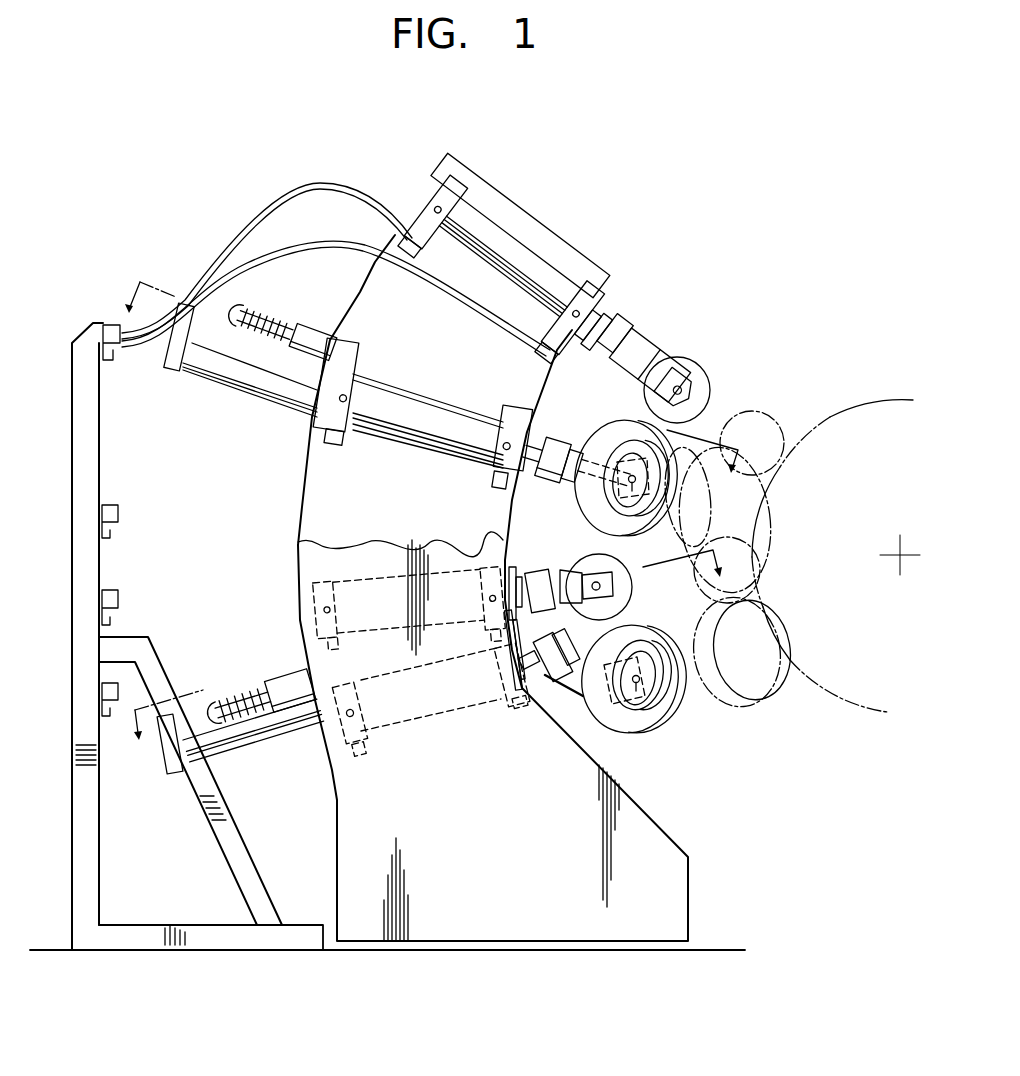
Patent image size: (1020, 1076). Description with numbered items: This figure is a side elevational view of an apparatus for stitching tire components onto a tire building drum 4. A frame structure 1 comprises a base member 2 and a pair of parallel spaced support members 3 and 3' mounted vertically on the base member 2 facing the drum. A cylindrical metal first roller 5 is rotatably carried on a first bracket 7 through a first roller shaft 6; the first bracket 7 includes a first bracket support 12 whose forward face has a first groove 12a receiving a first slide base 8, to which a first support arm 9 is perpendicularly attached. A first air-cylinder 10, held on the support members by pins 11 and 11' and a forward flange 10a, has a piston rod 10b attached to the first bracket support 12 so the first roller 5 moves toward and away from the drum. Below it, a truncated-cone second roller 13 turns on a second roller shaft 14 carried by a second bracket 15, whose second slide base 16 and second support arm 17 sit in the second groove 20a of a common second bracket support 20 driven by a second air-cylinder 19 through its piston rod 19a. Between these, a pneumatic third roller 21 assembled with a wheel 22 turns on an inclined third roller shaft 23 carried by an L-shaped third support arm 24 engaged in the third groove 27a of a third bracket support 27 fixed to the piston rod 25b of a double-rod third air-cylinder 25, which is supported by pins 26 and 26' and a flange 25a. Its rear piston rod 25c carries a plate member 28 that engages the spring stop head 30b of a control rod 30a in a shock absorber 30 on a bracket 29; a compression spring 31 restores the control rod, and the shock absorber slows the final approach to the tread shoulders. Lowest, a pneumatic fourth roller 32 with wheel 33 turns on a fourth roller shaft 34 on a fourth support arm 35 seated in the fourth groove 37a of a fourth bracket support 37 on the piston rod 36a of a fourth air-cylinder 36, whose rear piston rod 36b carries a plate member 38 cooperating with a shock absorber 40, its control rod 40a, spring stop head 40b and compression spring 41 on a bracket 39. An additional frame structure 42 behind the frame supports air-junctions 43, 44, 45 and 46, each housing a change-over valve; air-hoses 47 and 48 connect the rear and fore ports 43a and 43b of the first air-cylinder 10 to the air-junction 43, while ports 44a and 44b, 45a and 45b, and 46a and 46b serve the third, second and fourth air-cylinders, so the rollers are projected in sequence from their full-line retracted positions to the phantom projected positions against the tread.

The frame structure 1 is at (496, 190).
The base member 2 is at (696, 949).
The support member 3 is at (470, 635).
The support member 3' is at (341, 445).
The tire building drum 4 is at (878, 394).
The first roller 5 is at (694, 369).
The first roller shaft 6 is at (686, 368).
The first bracket 7 is at (646, 333).
The first slide base 8 is at (637, 310).
The first support arm 9 is at (665, 344).
The first air-cylinder 10 is at (512, 238).
The flange 10a is at (603, 292).
The piston rod 10b is at (605, 318).
The pin 11 is at (416, 197).
The pin 11' is at (567, 298).
The first bracket support 12 is at (606, 357).
The first groove 12a is at (609, 364).
The second roller 13 is at (633, 585).
The second roller shaft 14 is at (600, 582).
The second bracket 15 is at (540, 572).
The second slide base 16 is at (558, 573).
The second support arm 17 is at (568, 568).
The second air-cylinder 19 is at (380, 589).
The piston rod 19a is at (490, 567).
The second bracket support 20 is at (548, 612).
The second groove 20a is at (508, 563).
The third roller 21 is at (658, 448).
The wheel 22 is at (628, 432).
The third roller shaft 23 is at (650, 512).
The third support arm 24 is at (578, 445).
The third air-cylinder 25 is at (420, 396).
The flange 25a is at (518, 422).
The piston rod 25b is at (501, 490).
The piston rod 25c is at (229, 378).
The pin 26 is at (376, 367).
The pin 26' is at (428, 424).
The third bracket support 27 is at (555, 438).
The third groove 27a is at (559, 481).
The plate member 28 is at (176, 368).
The bracket 29 is at (348, 348).
The shock absorber 30 is at (314, 328).
The control rod 30a is at (264, 323).
The spring stop head 30b is at (232, 320).
The compression spring 31 is at (283, 334).
The fourth roller 32 is at (645, 734).
The wheel 33 is at (654, 703).
The fourth roller shaft 34 is at (617, 733).
The fourth support arm 35 is at (568, 687).
The fourth air-cylinder 36 is at (424, 710).
The piston rod 36a is at (529, 690).
The piston rod 36b is at (264, 748).
The fourth bracket support 37 is at (556, 640).
The fourth groove 37a is at (550, 680).
The plate member 38 is at (166, 776).
The bracket 39 is at (322, 680).
The shock absorber 40 is at (290, 678).
The control rod 40a is at (253, 686).
The spring stop head 40b is at (215, 702).
The compression spring 41 is at (261, 695).
The additional frame structure 42 is at (95, 862).
The air-junction 43 is at (112, 345).
The port 43a is at (412, 250).
The port 43b is at (548, 349).
The air-junction 44 is at (120, 512).
The port 44a is at (334, 446).
The port 44b is at (493, 478).
The air-junction 45 is at (120, 599).
The port 45a is at (338, 643).
The port 45b is at (490, 636).
The air-junction 46 is at (100, 691).
The port 46a is at (364, 756).
The port 46b is at (506, 704).
The air-hose 47 is at (307, 180).
The air-hose 48 is at (332, 242).